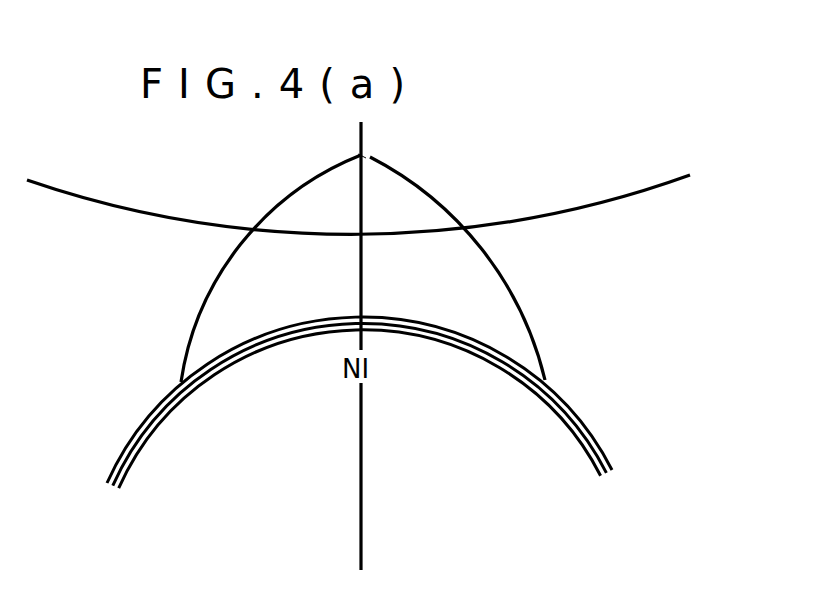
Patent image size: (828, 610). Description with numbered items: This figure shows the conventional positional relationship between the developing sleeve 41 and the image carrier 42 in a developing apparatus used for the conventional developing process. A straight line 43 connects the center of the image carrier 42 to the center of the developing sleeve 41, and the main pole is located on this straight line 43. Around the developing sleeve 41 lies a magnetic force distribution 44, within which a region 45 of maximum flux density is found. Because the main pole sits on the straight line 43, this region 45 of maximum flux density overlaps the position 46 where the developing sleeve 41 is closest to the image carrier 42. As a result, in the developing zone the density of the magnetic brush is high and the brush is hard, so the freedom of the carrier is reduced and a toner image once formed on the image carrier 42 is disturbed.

The developing sleeve 41 is at (598, 442).
The image carrier 42 is at (650, 188).
The straight line 43 is at (364, 456).
The magnetic force distribution 44 is at (458, 208).
The region of maximum flux density 45 is at (369, 151).
The position where the developing sleeve is closest to the image carrier 46 is at (366, 240).